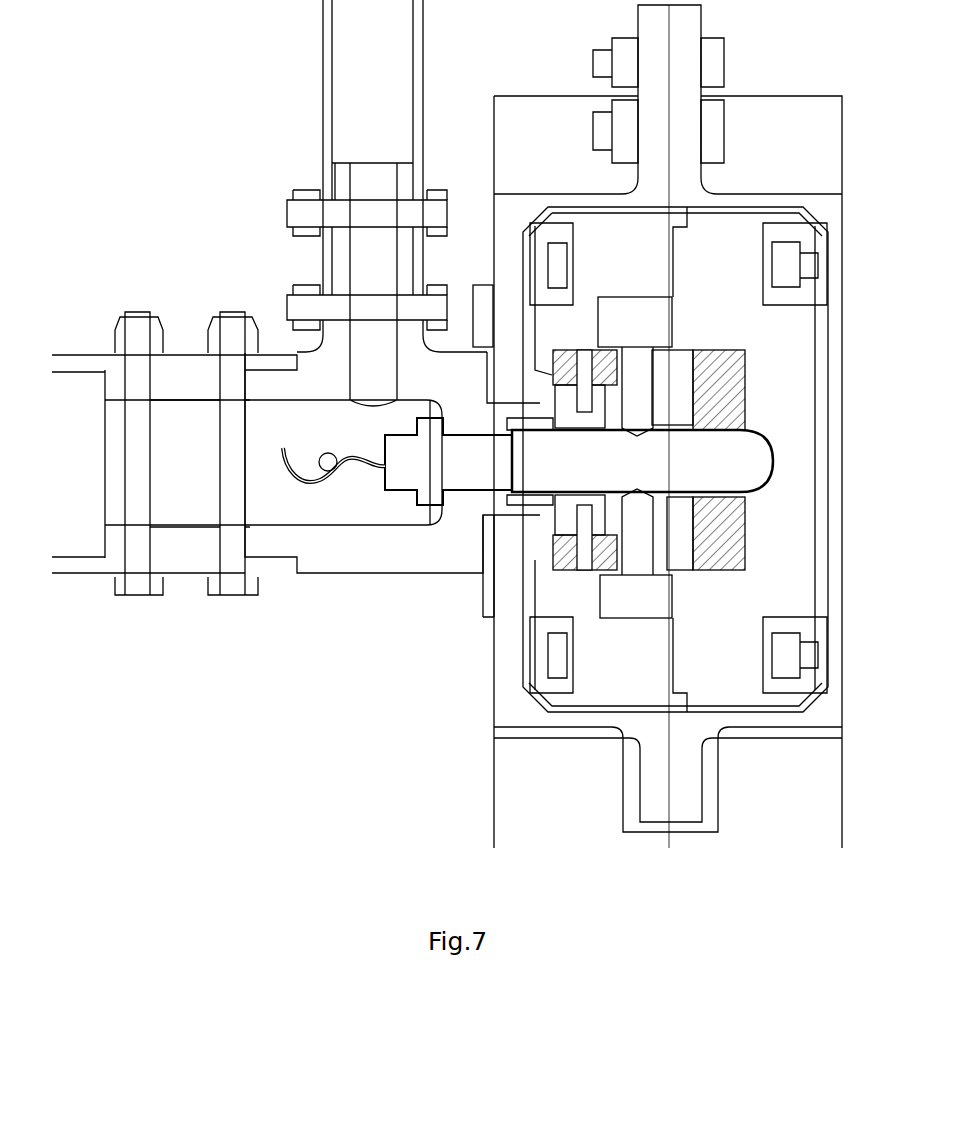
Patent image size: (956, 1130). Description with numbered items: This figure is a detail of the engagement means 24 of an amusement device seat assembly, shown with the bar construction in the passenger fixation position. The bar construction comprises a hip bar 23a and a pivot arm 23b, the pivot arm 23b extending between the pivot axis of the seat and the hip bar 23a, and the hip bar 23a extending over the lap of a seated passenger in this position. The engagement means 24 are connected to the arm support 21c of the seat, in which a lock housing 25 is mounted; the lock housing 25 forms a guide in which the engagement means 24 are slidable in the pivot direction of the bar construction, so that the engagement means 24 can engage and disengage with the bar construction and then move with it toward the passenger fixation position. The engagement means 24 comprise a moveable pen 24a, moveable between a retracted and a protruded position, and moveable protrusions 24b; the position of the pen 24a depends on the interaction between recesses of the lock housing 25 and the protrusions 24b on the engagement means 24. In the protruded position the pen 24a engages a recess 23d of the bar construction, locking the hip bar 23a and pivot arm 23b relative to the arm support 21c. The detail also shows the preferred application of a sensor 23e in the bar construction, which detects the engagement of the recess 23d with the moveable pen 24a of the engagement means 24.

The arm support 21c is at (668, 426).
The hip bar 23a is at (296, 464).
The pivot arm 23b is at (387, 200).
The recess 23d is at (533, 415).
The sensor 23e is at (397, 462).
The engagement means 24 is at (715, 547).
The moveable pen 24a is at (642, 461).
The moveable protrusion 24b is at (635, 457).
The lock housing 25 is at (675, 458).